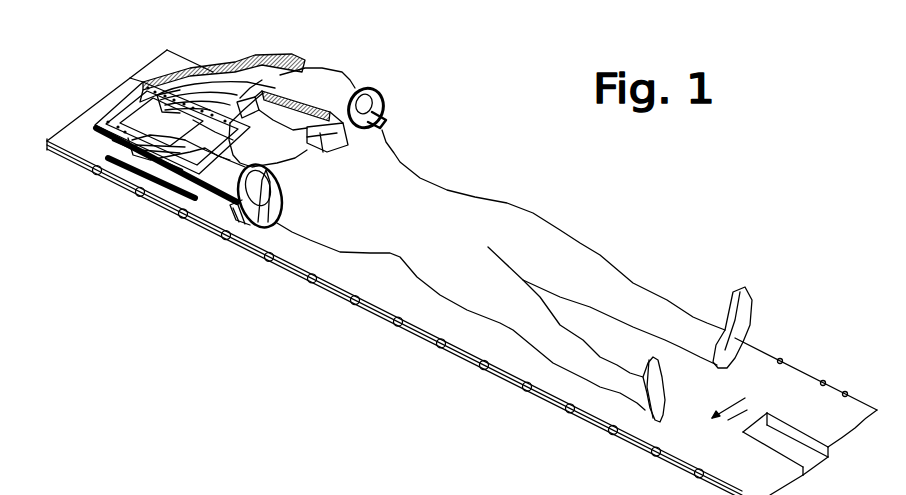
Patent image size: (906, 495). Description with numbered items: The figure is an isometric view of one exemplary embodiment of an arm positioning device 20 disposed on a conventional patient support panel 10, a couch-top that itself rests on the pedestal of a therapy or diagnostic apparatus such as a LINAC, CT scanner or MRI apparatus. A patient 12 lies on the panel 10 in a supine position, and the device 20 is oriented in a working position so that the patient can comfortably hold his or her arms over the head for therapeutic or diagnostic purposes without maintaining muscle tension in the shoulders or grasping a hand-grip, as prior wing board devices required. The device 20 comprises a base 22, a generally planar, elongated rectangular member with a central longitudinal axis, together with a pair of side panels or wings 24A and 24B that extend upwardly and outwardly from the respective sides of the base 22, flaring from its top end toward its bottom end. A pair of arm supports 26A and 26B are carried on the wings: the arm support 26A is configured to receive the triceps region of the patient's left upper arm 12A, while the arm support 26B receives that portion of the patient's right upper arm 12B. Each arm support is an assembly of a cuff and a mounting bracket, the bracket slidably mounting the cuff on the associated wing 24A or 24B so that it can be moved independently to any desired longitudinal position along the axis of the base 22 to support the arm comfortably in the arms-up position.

The patient support panel 10 is at (353, 277).
The patient 12 is at (451, 280).
The left upper arm 12A is at (305, 78).
The right upper arm 12B is at (218, 163).
The arm positioning device 20 is at (380, 77).
The base 22 is at (133, 103).
The wing 24A is at (257, 60).
The wing 24B is at (140, 177).
The arm support 26A is at (388, 100).
The arm support 26B is at (298, 199).